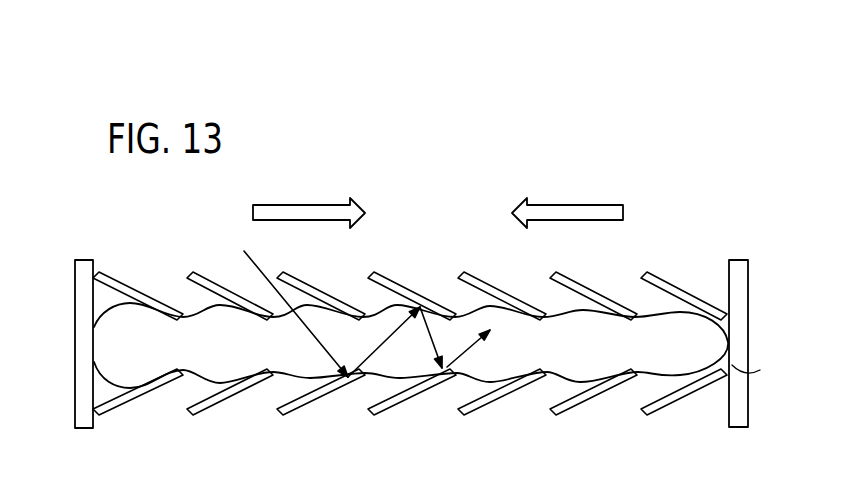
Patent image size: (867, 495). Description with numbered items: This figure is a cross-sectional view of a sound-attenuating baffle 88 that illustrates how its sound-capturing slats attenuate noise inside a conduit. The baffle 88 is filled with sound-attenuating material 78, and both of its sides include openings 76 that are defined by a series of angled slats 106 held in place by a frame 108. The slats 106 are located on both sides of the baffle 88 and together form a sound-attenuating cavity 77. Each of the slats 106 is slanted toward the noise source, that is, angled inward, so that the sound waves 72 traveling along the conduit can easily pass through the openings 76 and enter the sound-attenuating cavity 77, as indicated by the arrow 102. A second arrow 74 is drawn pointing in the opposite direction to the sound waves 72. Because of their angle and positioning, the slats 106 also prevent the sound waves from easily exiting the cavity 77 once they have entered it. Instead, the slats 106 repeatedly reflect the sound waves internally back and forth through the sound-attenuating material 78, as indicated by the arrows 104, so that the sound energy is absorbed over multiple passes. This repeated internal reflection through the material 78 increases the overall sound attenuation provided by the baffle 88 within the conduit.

The sound waves 72 is at (300, 210).
The second direction of movement 74 is at (568, 210).
The openings 76 is at (217, 410).
The sound-attenuating cavity 77 is at (732, 365).
The sound-attenuating material 78 is at (705, 338).
The sound-attenuating baffle 88 is at (71, 233).
The arrow 102 is at (260, 266).
The arrows 104 is at (420, 310).
The angled slats 106 is at (688, 392).
The frame 108 is at (740, 272).